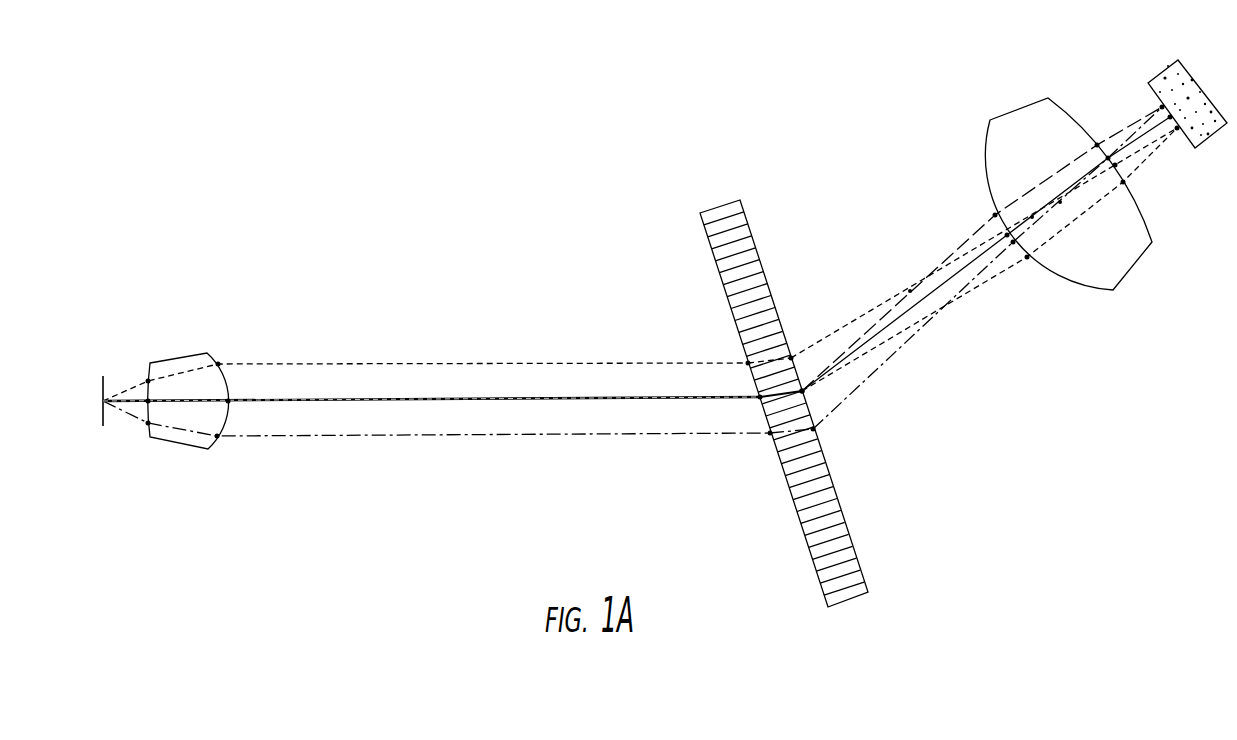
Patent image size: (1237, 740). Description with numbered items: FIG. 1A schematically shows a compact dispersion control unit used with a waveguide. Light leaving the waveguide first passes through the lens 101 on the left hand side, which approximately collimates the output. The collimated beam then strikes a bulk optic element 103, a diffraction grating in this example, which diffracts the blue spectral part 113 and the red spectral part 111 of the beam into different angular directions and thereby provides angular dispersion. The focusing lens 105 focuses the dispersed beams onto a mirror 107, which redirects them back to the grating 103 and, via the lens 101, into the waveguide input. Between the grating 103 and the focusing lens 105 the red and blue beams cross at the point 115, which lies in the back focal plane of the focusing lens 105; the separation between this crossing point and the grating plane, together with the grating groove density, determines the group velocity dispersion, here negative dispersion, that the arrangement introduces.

The lens 101 is at (190, 448).
The bulk optic element 103 is at (840, 497).
The focusing lens 105 is at (1003, 119).
The mirror 107 is at (1162, 72).
The red spectral part 111 is at (866, 382).
The blue spectral part 113 is at (827, 338).
The beam crossing point 115 is at (950, 306).